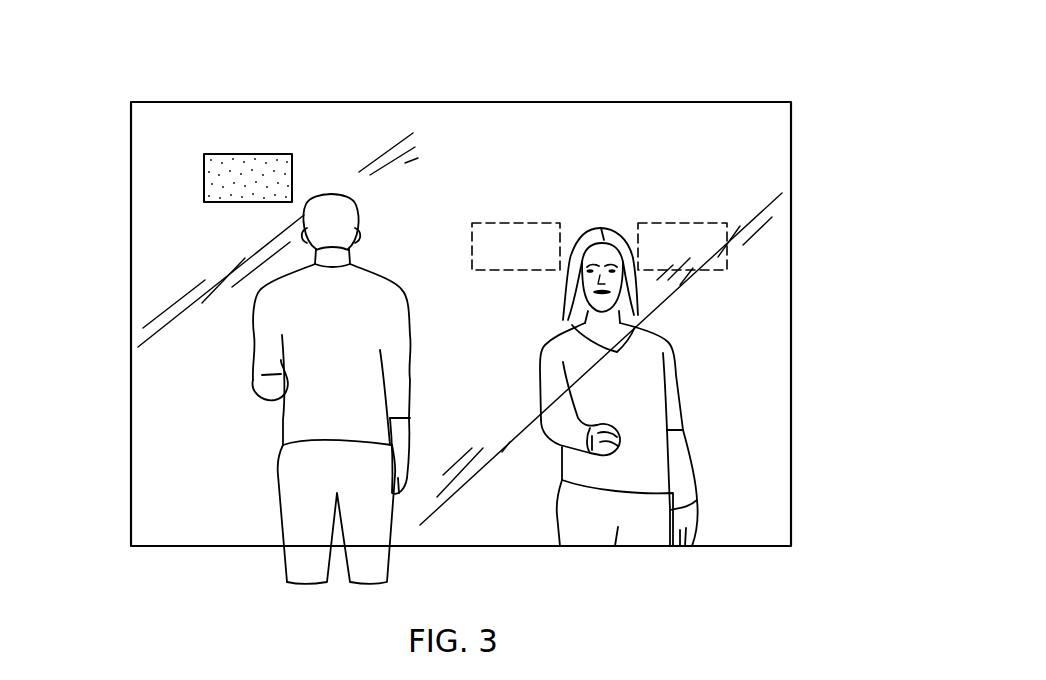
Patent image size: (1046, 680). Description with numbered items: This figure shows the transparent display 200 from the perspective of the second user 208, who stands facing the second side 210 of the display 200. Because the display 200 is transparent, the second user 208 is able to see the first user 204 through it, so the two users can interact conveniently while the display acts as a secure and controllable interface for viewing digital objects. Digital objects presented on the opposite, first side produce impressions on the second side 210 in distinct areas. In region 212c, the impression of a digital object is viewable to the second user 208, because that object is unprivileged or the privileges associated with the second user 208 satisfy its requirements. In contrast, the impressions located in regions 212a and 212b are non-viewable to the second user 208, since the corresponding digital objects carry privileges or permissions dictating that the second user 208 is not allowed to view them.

The transparent display 200 is at (791, 133).
The first user 204 is at (672, 395).
The second user 208 is at (262, 375).
The second side 210 is at (148, 235).
The region of the second side 212a is at (688, 222).
The region of the second side 212b is at (523, 222).
The region of the second side 212c is at (245, 163).